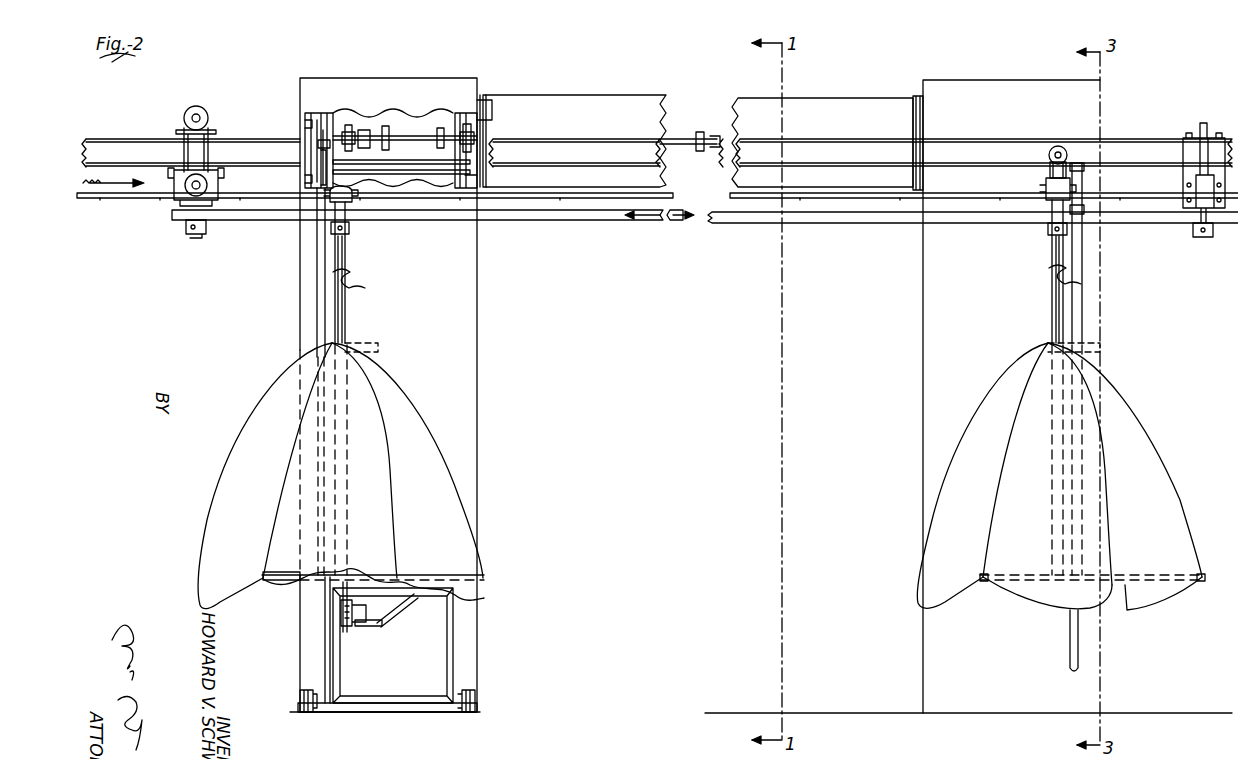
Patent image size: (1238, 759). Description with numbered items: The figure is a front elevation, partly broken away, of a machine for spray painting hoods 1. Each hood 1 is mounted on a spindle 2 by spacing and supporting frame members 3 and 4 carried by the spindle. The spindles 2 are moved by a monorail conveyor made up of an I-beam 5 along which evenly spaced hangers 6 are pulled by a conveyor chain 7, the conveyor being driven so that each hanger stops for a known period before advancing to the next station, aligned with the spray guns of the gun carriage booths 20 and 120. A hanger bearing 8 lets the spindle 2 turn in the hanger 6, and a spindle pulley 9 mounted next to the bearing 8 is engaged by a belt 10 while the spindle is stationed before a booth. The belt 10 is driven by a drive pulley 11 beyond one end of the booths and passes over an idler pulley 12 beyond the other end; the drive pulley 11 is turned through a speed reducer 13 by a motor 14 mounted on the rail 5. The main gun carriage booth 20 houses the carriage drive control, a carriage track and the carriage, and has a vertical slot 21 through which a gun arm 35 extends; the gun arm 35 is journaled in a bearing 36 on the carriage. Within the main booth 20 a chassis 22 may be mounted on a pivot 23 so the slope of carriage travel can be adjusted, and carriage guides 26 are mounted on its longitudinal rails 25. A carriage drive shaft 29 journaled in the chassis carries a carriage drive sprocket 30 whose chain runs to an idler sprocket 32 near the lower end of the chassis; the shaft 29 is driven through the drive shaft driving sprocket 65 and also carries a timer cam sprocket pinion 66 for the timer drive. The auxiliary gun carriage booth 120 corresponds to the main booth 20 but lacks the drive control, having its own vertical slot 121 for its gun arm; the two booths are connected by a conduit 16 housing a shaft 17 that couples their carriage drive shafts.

The hood 1 is at (228, 457).
The spindle 2 is at (345, 310).
The supporting frame member 3 is at (352, 341).
The supporting frame member 4 is at (283, 582).
The I-beam 5 is at (108, 150).
The hanger 6 is at (1052, 150).
The conveyor chain 7 is at (134, 200).
The hanger bearing 8 is at (348, 198).
The spindle pulley 9 is at (350, 230).
The belt 10 is at (589, 222).
The drive pulley 11 is at (186, 234).
The idler pulley 12 is at (1215, 238).
The speed reducer 13 is at (210, 184).
The motor 14 is at (207, 115).
The conduit 16 is at (653, 106).
The shaft 17 is at (680, 137).
The main gun carriage booth 20 is at (480, 322).
The vertical slot 21 is at (322, 269).
The chassis 22 is at (466, 126).
The pivot 23 is at (466, 690).
The longitudinal rail 25 is at (340, 668).
The carriage guide 26 is at (327, 640).
The carriage drive shaft 29 is at (405, 130).
The carriage drive sprocket 30 is at (349, 124).
The idler sprocket 32 is at (350, 626).
The gun arm 35 is at (318, 172).
The bearing 36 is at (318, 143).
The drive shaft driving sprocket 65 is at (440, 128).
The timer cam sprocket pinion 66 is at (387, 128).
The auxiliary gun carriage booth 120 is at (937, 308).
The vertical slot 121 is at (1083, 290).